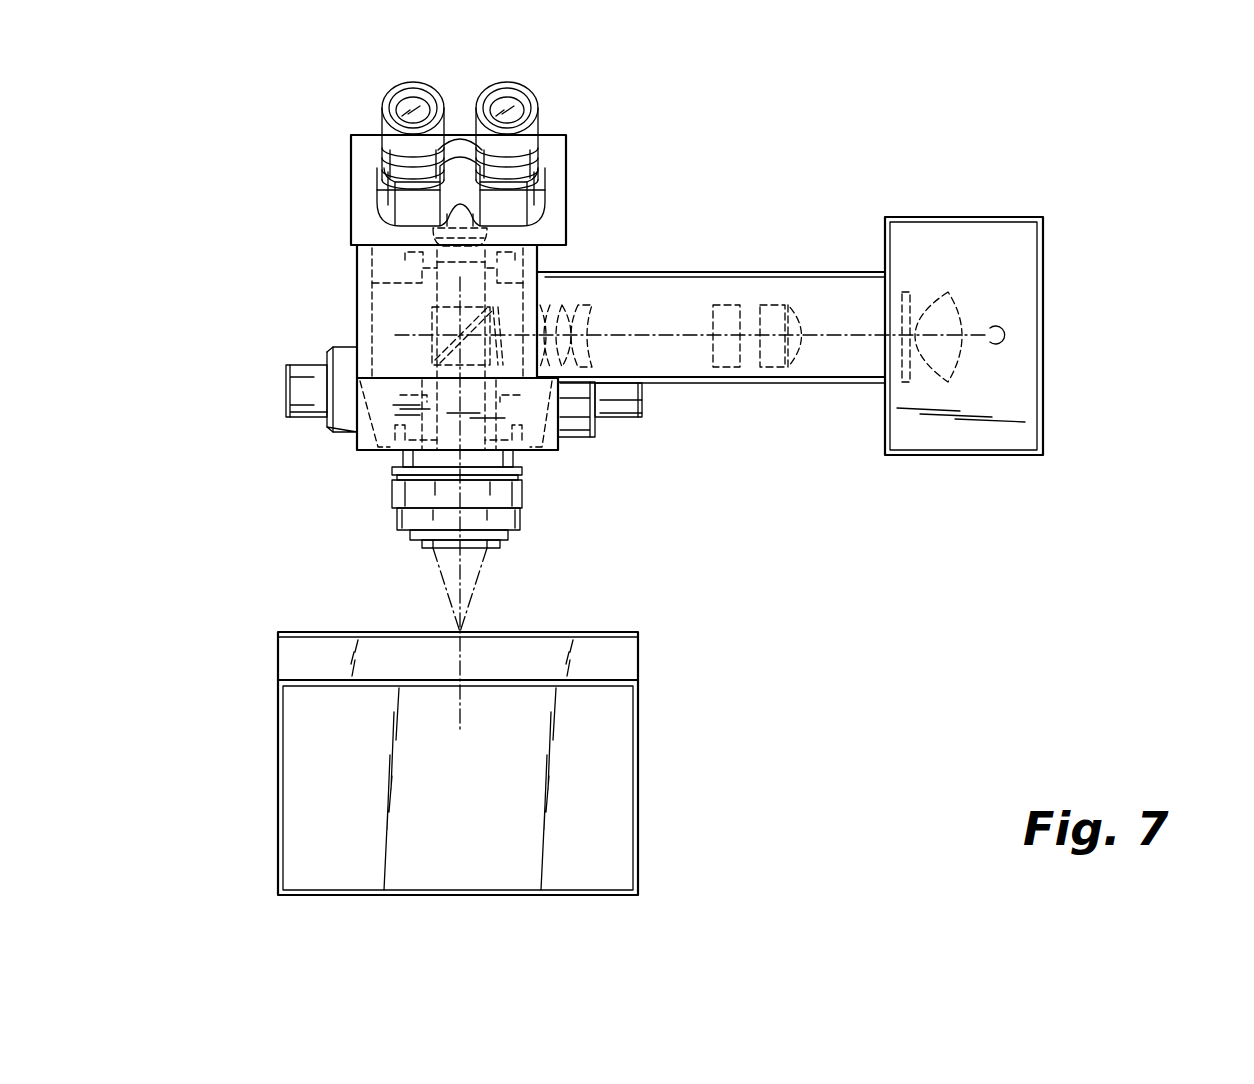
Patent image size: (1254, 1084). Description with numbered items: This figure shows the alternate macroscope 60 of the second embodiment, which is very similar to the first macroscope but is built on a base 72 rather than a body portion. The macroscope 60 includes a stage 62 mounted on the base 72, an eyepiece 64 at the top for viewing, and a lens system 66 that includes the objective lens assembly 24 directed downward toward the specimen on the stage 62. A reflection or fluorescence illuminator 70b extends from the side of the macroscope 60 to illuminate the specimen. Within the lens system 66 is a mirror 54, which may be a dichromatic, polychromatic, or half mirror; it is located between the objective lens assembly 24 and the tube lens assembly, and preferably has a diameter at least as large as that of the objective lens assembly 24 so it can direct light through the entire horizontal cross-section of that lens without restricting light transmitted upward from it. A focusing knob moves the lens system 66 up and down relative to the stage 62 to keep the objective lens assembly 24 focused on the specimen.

The objective lens assembly 24 is at (547, 512).
The mirror 54 is at (458, 336).
The macroscope 60 is at (248, 433).
The stage 62 is at (617, 632).
The eyepiece 64 is at (384, 100).
The lens system 66 is at (342, 505).
The reflection or fluorescence illuminator 70b is at (787, 190).
The base 72 is at (638, 777).